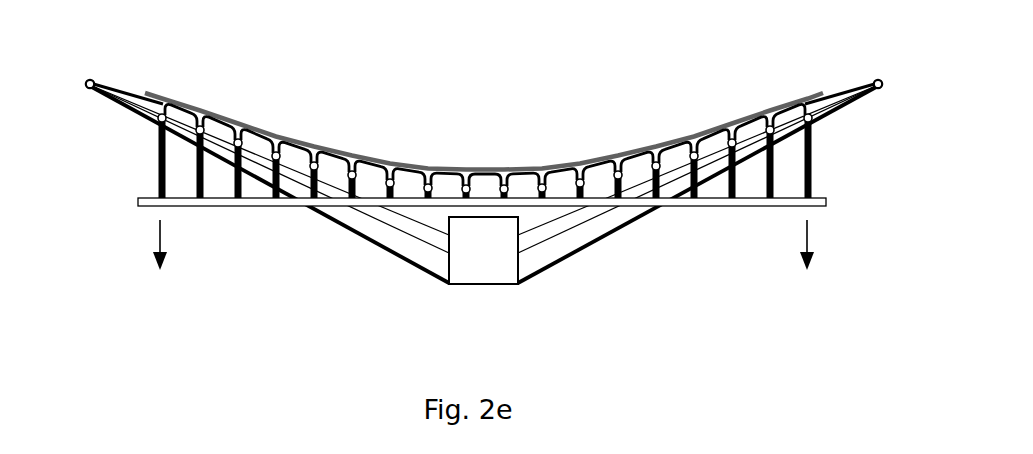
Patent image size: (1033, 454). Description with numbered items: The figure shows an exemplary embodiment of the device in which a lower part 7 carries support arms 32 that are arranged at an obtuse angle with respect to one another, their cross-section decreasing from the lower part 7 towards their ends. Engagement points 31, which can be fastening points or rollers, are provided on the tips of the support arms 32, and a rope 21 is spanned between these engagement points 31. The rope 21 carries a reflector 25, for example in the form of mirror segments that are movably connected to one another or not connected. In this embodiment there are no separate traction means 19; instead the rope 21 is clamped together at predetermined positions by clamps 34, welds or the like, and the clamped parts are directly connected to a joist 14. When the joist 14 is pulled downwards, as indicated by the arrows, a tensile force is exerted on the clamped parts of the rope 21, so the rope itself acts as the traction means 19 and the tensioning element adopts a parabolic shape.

The lower part 7 is at (558, 295).
The joist 14 is at (253, 210).
The traction means 19 is at (193, 165).
The rope 21 is at (138, 118).
The reflector 25 is at (752, 112).
The engagement points 31 is at (85, 84).
The support arms 32 is at (387, 217).
The clamps 34 is at (292, 148).